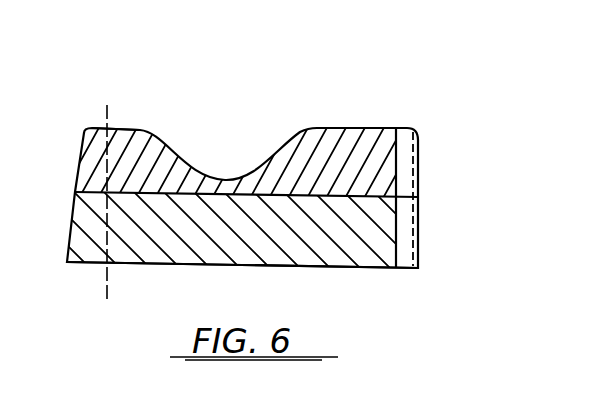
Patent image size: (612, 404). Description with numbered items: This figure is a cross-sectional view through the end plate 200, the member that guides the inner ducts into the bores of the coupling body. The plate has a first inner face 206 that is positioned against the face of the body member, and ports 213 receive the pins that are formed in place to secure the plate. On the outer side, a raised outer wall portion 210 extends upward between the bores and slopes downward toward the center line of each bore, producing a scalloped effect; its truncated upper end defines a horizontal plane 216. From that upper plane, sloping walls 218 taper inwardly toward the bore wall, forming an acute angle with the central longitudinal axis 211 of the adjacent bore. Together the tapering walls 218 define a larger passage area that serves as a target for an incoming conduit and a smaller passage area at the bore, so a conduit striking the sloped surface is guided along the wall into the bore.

The end plate 200 is at (440, 184).
The first inner face 206 is at (373, 270).
The raised outer wall portion 210 is at (415, 165).
The central longitudinal axis 211 is at (107, 278).
The ports 213 is at (400, 218).
The horizontal plane 216 is at (352, 105).
The sloping walls 218 is at (170, 155).